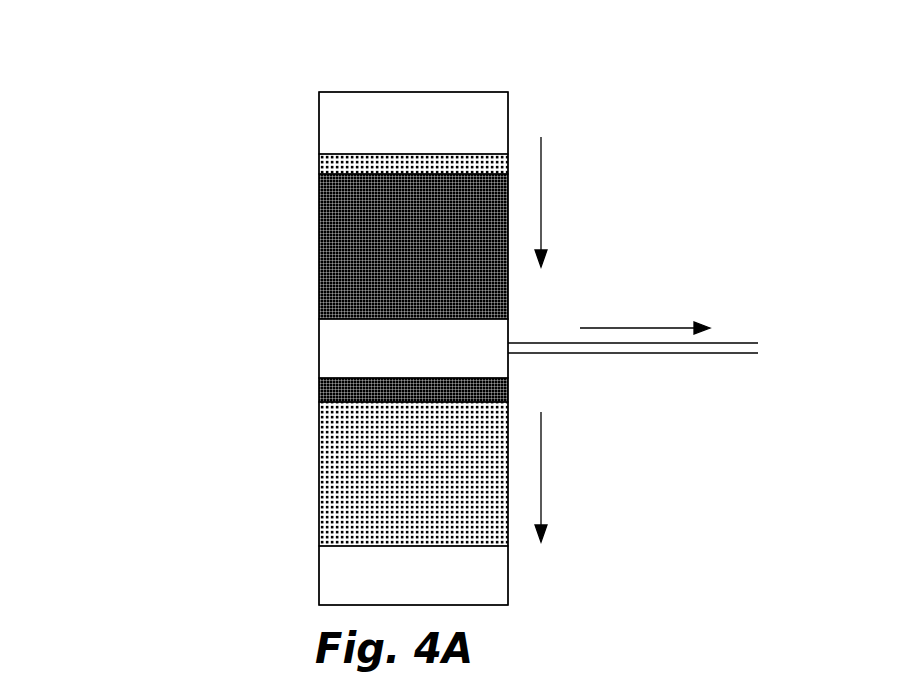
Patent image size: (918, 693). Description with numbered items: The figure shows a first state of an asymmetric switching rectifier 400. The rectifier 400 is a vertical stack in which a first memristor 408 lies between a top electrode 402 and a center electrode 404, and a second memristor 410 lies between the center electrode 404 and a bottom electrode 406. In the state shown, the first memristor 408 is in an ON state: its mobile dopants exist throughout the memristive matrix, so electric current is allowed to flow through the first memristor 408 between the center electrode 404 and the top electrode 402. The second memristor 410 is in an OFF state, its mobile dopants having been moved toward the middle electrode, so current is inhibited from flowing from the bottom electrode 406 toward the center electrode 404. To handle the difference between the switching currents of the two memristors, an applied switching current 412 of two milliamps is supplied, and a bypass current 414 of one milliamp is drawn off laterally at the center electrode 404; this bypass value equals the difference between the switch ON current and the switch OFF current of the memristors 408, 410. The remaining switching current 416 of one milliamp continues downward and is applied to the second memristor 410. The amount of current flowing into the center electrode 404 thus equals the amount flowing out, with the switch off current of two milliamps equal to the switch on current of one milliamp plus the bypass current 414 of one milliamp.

The asymmetric switching rectifier 400 is at (100, 132).
The top electrode 402 is at (413, 123).
The center electrode 404 is at (538, 348).
The bottom electrode 406 is at (413, 575).
The first memristor 408 is at (320, 237).
The second memristor 410 is at (320, 475).
The applied switching current 412 is at (541, 167).
The bypass current 414 is at (672, 327).
The remaining switching current 416 is at (541, 509).